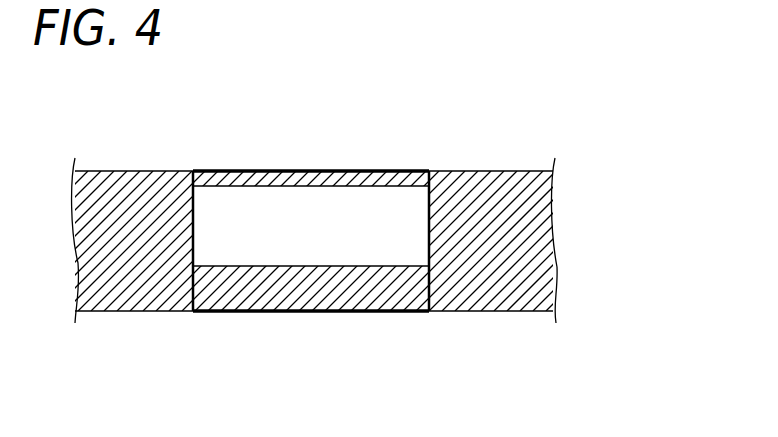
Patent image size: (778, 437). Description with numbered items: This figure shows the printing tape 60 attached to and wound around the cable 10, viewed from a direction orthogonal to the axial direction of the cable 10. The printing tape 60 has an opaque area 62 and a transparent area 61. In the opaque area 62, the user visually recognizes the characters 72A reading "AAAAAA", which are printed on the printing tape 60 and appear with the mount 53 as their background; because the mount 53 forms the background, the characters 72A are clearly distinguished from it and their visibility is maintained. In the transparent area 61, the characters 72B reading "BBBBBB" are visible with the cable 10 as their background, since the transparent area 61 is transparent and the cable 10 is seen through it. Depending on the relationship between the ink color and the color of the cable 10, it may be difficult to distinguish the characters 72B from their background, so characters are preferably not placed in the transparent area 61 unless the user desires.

The cable 10 is at (512, 276).
The mount 53 is at (370, 200).
The printing tape 60 is at (429, 171).
The transparent area 61 is at (388, 308).
The opaque area 62 is at (233, 212).
The characters 72A is at (323, 214).
The characters 72B is at (308, 303).